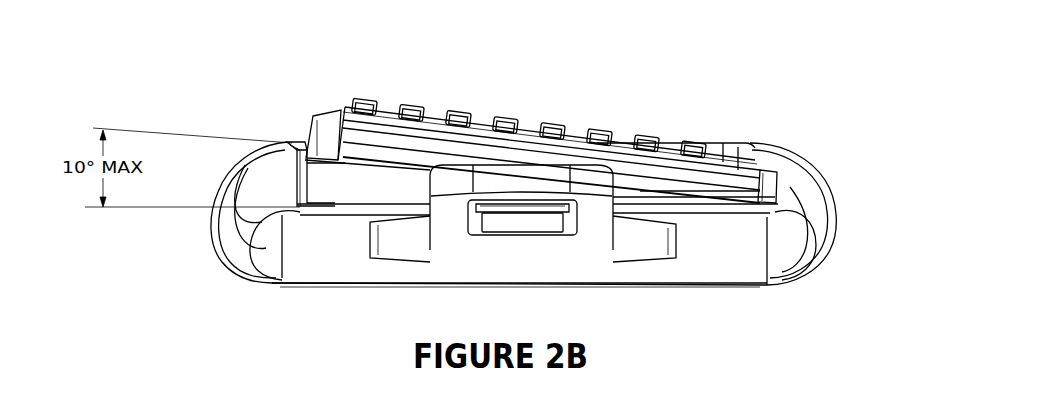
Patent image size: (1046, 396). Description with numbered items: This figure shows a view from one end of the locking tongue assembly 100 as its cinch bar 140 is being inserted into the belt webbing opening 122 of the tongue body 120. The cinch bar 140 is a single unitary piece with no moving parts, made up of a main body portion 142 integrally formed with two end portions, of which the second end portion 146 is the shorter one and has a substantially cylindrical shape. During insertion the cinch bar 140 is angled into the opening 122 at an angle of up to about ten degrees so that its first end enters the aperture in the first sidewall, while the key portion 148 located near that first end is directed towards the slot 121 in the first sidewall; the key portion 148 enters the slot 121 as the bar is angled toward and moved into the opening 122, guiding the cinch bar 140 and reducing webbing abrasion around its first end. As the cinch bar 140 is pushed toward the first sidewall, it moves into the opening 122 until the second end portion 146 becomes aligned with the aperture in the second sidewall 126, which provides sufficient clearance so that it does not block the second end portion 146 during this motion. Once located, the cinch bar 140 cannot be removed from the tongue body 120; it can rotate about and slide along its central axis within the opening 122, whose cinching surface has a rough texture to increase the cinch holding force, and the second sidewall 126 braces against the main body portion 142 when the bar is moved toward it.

The tongue assembly 100 is at (166, 100).
The tongue body 120 is at (838, 245).
The slot 121 is at (773, 207).
The belt webbing opening 122 is at (347, 178).
The second sidewall 126 is at (295, 168).
The cinch bar 140 is at (663, 148).
The main body portion 142 is at (560, 133).
The second end portion 146 is at (308, 145).
The key portion 148 is at (760, 188).